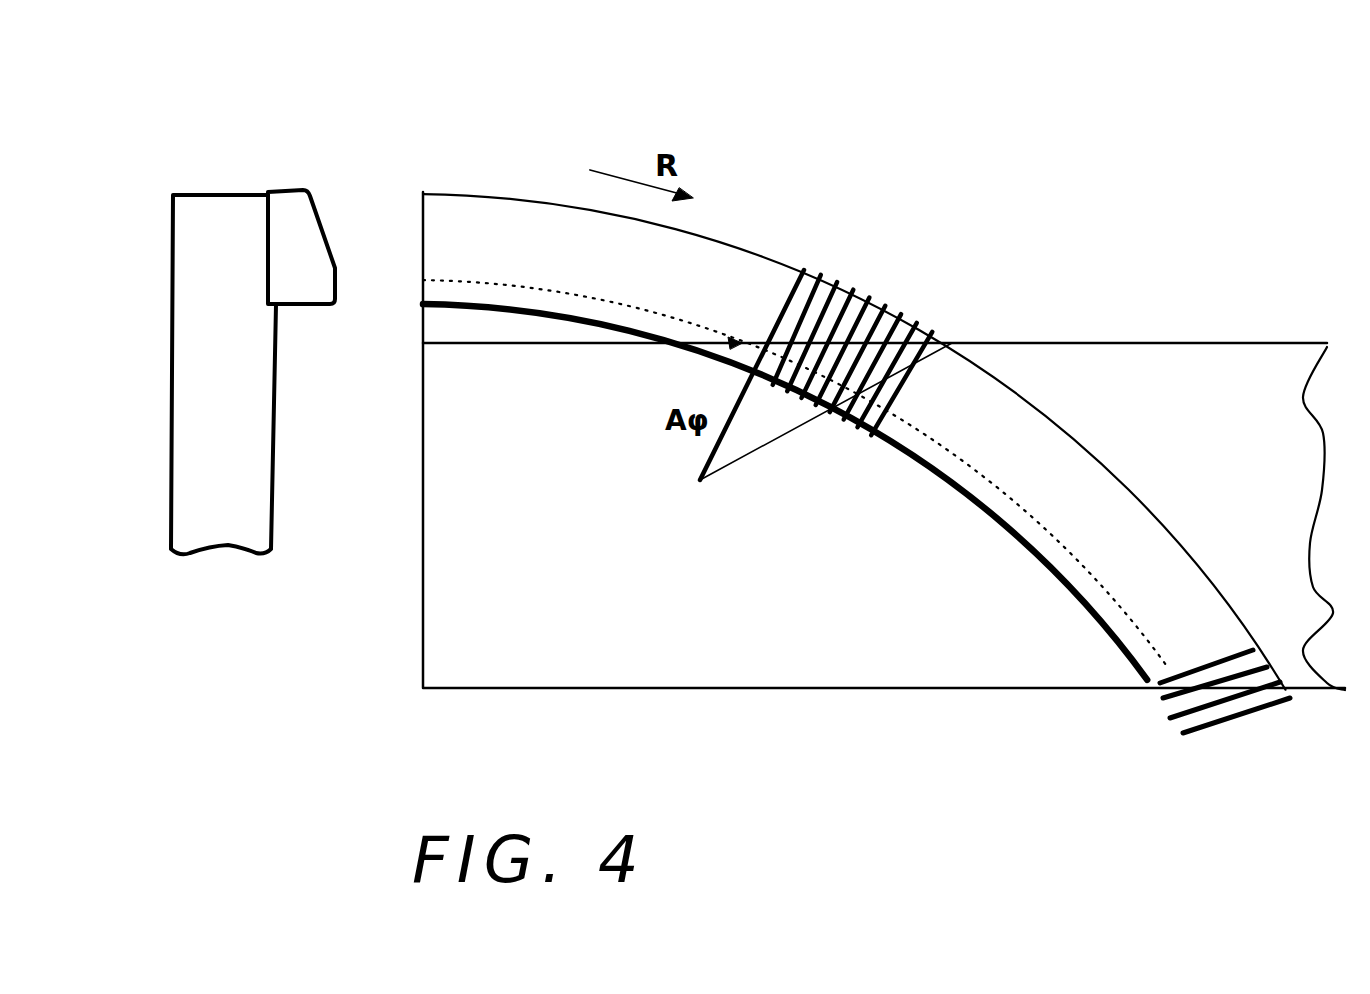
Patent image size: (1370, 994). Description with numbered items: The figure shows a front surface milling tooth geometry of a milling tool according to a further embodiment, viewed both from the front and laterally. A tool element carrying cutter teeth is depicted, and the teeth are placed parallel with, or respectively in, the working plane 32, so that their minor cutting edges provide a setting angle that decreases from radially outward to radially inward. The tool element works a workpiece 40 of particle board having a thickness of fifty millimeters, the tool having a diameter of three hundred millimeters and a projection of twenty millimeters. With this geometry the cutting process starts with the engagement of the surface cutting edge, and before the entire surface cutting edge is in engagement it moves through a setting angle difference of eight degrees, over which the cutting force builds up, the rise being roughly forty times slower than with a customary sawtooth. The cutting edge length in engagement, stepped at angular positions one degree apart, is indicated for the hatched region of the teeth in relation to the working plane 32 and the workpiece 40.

The working plane 32 is at (923, 643).
The workpiece 40 is at (1020, 692).